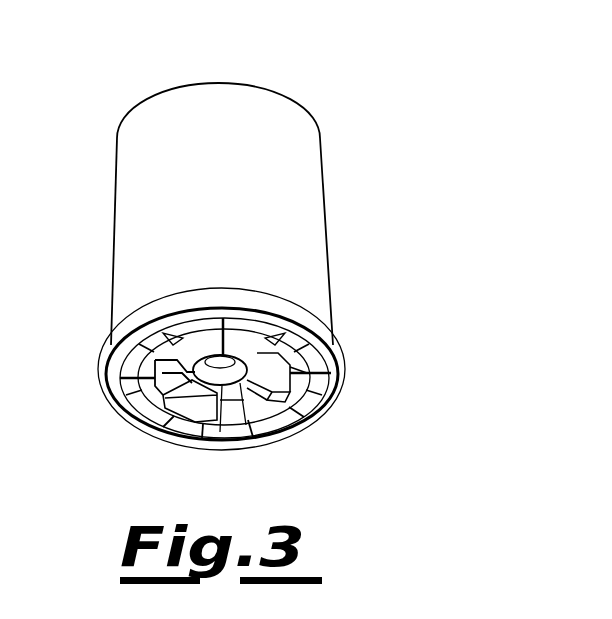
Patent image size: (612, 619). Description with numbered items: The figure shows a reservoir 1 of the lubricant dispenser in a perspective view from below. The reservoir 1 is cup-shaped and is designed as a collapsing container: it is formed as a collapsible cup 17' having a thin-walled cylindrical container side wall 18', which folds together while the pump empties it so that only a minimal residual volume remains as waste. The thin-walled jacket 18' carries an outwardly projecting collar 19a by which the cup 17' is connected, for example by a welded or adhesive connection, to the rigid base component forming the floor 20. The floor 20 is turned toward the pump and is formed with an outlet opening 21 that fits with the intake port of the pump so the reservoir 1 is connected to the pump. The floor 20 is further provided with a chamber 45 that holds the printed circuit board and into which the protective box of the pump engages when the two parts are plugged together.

The reservoir 1 is at (352, 85).
The collapsible cup 17' is at (275, 117).
The container side wall 18' is at (270, 241).
The outwardly projecting collar 19a is at (298, 308).
The floor 20 is at (108, 386).
The outlet opening 21 is at (238, 392).
The chamber 45 is at (188, 430).